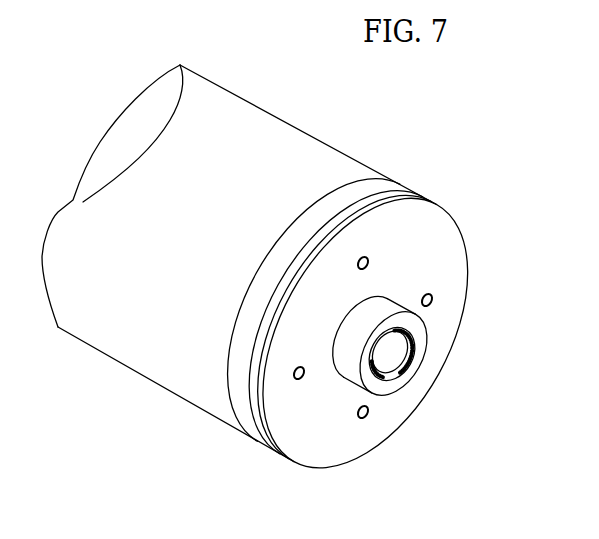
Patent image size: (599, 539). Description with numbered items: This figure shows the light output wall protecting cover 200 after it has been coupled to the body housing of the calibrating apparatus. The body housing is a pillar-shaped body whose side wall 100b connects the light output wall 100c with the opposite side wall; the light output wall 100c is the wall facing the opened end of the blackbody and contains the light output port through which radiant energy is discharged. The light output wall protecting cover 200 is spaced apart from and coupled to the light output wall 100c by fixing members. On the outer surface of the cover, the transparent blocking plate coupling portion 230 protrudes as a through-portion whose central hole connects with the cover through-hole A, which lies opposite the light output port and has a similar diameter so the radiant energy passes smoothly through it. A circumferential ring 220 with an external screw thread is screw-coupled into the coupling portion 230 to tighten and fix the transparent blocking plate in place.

The side wall 100b is at (297, 150).
The light output wall 100c is at (372, 193).
The light output wall protecting cover 200 is at (447, 240).
The circumferential ring 220 is at (390, 380).
The transparent blocking plate coupling portion 230 is at (352, 362).
The cover through-hole A is at (384, 350).